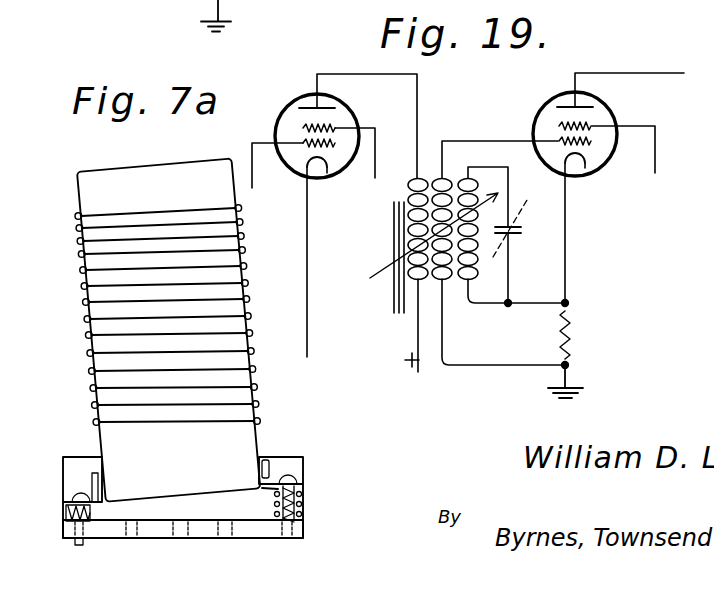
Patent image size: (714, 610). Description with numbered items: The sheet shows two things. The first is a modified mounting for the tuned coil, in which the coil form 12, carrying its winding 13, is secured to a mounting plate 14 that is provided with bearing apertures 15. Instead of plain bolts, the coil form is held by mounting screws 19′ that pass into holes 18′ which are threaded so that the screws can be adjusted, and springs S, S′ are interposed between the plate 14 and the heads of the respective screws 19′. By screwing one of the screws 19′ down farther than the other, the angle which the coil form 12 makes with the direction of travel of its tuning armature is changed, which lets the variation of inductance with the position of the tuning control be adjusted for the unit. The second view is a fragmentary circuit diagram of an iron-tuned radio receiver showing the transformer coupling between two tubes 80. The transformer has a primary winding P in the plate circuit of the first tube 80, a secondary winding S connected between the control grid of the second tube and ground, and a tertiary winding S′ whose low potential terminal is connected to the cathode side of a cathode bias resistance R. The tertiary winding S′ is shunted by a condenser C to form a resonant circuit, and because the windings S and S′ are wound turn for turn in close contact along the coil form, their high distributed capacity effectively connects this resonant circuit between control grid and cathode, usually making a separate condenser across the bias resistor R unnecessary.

In FIG. 7A, the coil form 12 is at (202, 173).
In FIG. 7A, the winding 13 is at (224, 228).
In FIG. 7A, the mounting plate 14 is at (207, 535).
In FIG. 7A, the bearing aperture 15 is at (183, 535).
In FIG. 7A, the threaded holes 18′ is at (73, 533).
In FIG. 7A, the mounting screws 19′ is at (78, 493).
In FIG. 7A, the spring S is at (66, 513).
In FIG. 19, the spring S is at (448, 179).
In FIG. 7A, the spring S′ is at (300, 495).
In FIG. 19, the spring S′ is at (474, 182).
In FIG. 19, the tube 80 is at (357, 113).
In FIG. 19, the primary winding P is at (412, 179).
In FIG. 19, the condenser C is at (512, 229).
In FIG. 19, the cathode bias resistance R is at (571, 334).